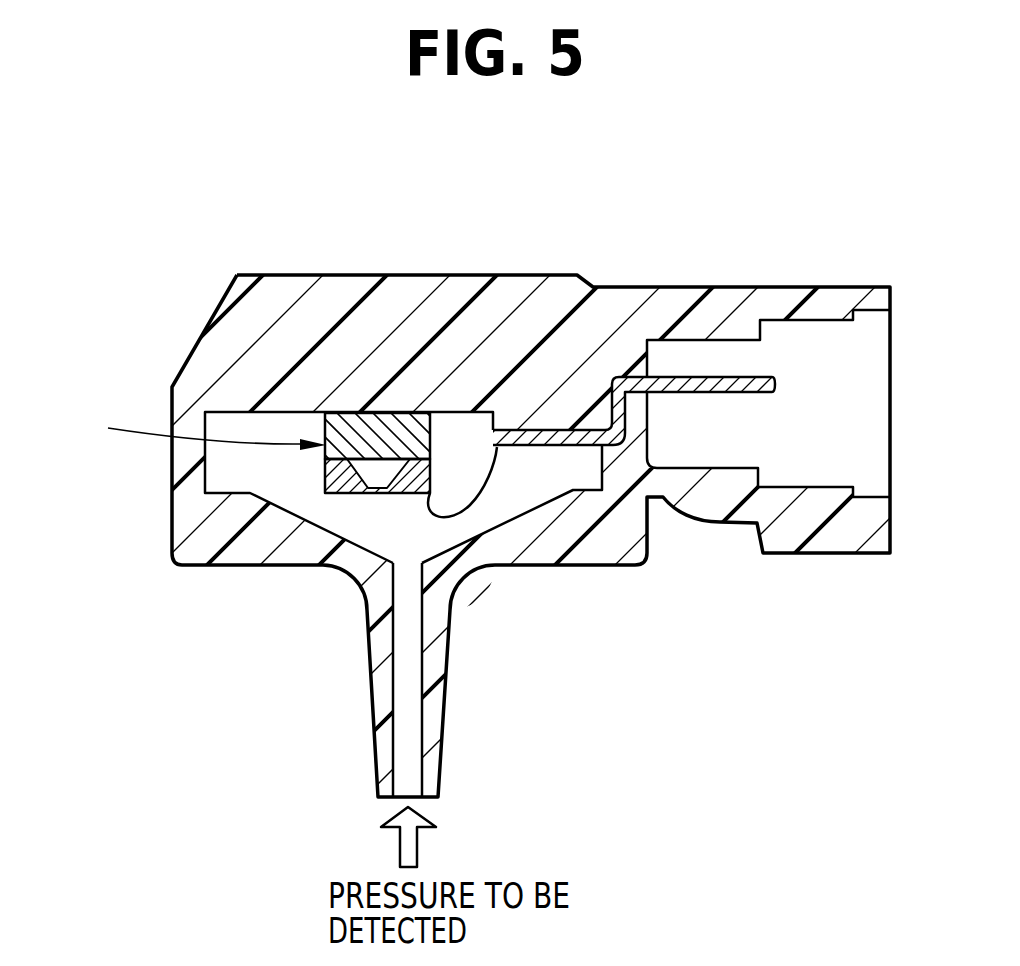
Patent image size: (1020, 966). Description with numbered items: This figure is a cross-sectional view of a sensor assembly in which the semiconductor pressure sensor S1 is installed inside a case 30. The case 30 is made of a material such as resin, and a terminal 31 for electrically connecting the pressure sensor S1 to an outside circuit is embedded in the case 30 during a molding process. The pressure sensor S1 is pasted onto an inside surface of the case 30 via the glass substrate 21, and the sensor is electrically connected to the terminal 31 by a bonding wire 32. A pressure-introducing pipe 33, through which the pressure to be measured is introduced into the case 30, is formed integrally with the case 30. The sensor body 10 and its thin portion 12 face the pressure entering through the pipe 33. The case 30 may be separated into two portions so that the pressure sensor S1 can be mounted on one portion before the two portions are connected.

The semiconductor pressure sensor chip 10 is at (325, 478).
The diaphragm 12 is at (375, 493).
The glass substrate 21 is at (394, 427).
The case 30 is at (312, 275).
The terminal 31 is at (697, 377).
The bonding wire 32 is at (467, 503).
The pressure-introducing pipe 33 is at (408, 727).
The semiconductor pressure sensor S1 is at (195, 432).